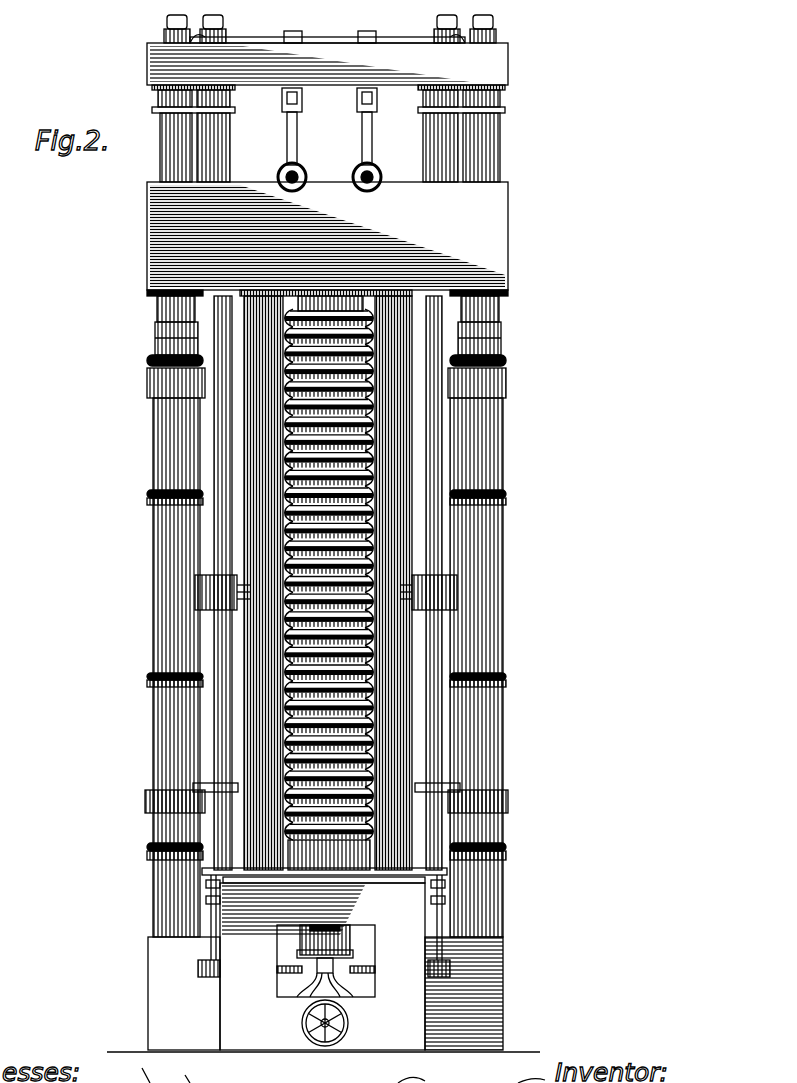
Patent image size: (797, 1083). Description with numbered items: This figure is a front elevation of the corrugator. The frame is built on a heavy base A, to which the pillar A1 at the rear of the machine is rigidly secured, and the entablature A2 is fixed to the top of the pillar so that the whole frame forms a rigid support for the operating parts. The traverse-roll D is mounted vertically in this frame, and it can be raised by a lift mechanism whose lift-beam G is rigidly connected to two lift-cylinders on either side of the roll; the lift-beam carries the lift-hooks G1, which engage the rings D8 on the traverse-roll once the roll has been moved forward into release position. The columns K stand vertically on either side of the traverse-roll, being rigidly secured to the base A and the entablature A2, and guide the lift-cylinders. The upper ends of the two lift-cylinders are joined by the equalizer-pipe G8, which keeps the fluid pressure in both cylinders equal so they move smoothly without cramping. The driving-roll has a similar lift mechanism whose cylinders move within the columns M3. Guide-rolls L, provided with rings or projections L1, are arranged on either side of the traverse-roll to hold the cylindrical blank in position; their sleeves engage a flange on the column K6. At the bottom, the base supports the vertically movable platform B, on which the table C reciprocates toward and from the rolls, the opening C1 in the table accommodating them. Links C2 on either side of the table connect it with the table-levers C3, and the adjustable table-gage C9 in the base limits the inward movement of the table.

The lift-beam G is at (327, 66).
The equalizer-pipe G8 is at (290, 35).
The lift-hooks G1 is at (362, 137).
The rings D8 is at (310, 168).
The columns M3 is at (443, 132).
The columns K is at (484, 141).
The entablature A2 is at (507, 223).
The pillar A1 is at (270, 313).
The traverse-roll D is at (313, 448).
The guide-rolls L is at (165, 590).
The rings or projections L1 is at (150, 496).
The column K6 is at (480, 879).
The table C is at (393, 870).
The platform B is at (410, 880).
The opening C1 is at (434, 890).
The links C2 is at (440, 927).
The table-levers C3 is at (374, 970).
The table-gage C9 is at (348, 1023).
The base A is at (162, 962).